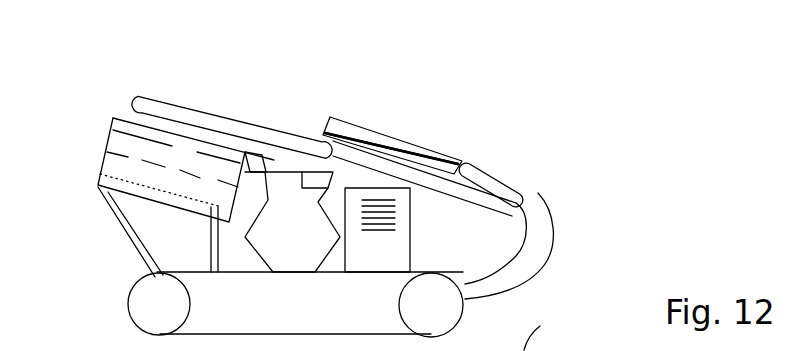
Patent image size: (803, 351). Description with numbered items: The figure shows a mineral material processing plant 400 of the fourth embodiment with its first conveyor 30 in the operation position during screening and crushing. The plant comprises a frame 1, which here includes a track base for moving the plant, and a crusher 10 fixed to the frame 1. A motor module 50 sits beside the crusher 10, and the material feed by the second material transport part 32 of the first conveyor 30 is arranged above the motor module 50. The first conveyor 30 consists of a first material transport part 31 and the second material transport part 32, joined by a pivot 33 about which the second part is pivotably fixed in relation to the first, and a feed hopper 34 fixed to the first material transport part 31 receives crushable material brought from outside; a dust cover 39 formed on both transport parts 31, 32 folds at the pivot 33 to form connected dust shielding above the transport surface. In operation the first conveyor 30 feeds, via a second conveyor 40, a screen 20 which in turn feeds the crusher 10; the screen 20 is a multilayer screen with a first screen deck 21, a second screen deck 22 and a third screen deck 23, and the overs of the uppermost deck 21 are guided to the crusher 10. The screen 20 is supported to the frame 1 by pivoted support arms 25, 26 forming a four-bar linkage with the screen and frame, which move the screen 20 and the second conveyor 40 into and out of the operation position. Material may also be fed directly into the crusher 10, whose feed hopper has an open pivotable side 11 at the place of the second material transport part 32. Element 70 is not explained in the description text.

The frame 1 is at (327, 322).
The crusher 10 is at (305, 248).
The open pivotable side 11 is at (337, 175).
The screen 20 is at (122, 110).
The first screen deck 21 is at (114, 116).
The second screen deck 22 is at (127, 155).
The third screen deck 23 is at (97, 173).
The support arm 25 is at (211, 249).
The support arm 26 is at (110, 235).
The first conveyor 30 is at (464, 139).
The first material transport part 31 is at (538, 193).
The second material transport part 32 is at (372, 138).
The pivot 33 is at (427, 148).
The feed hopper 34 is at (510, 189).
The dust cover 39 is at (387, 146).
The second conveyor 40 is at (235, 123).
The motor module 50 is at (393, 268).
The curved guide 70 is at (545, 243).
The processing plant 400 is at (652, 102).